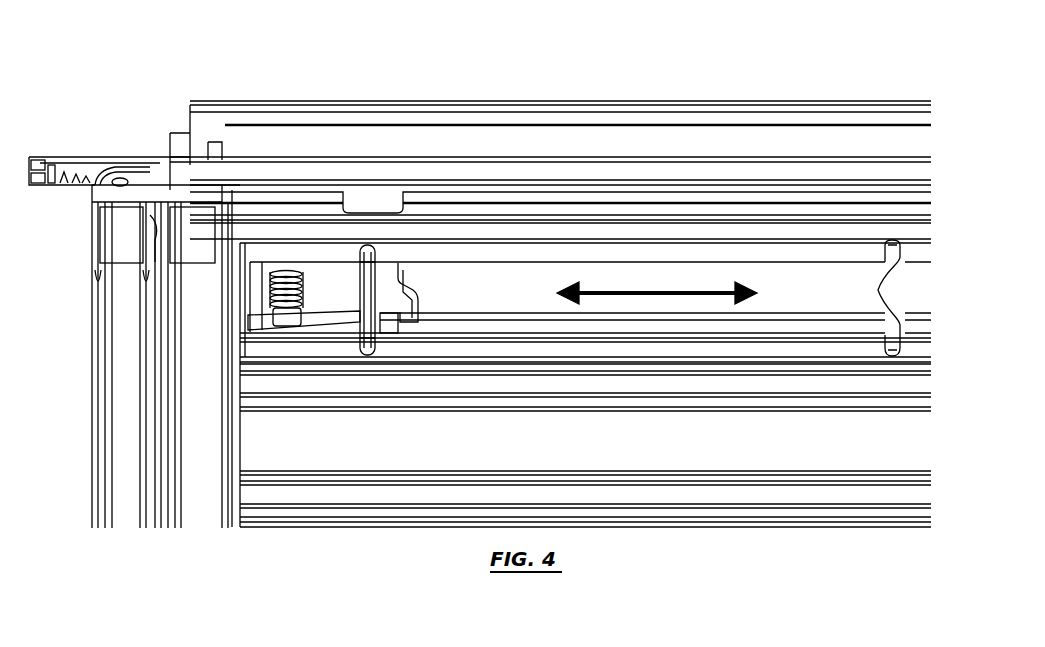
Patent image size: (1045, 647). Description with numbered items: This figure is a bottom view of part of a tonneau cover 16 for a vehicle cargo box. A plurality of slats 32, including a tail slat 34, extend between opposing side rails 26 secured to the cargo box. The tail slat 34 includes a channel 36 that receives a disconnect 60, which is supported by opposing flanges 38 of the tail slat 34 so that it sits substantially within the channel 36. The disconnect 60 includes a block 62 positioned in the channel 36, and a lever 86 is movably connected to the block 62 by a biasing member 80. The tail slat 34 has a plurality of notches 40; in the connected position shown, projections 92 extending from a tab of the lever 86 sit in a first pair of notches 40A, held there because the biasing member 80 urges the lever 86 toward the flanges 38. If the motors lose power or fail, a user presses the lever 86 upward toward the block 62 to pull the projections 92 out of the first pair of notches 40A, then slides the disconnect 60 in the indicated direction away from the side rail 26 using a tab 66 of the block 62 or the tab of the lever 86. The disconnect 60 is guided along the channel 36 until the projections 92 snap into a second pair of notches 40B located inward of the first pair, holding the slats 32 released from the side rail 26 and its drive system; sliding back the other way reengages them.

The tonneau cover 16 is at (811, 68).
The side rail 26 is at (125, 227).
The slat 32 is at (278, 450).
The tail slat 34 is at (490, 242).
The channel 36 is at (542, 268).
The flange 38 is at (918, 250).
The notch 40 is at (639, 321).
The first pair of notches 40A is at (370, 246).
The second pair of notches 40B is at (878, 290).
The disconnect 60 is at (327, 278).
The block 62 is at (433, 302).
The tab 66 is at (399, 298).
The biasing member 80 is at (265, 297).
The lever 86 is at (347, 313).
The projection 92 is at (376, 265).